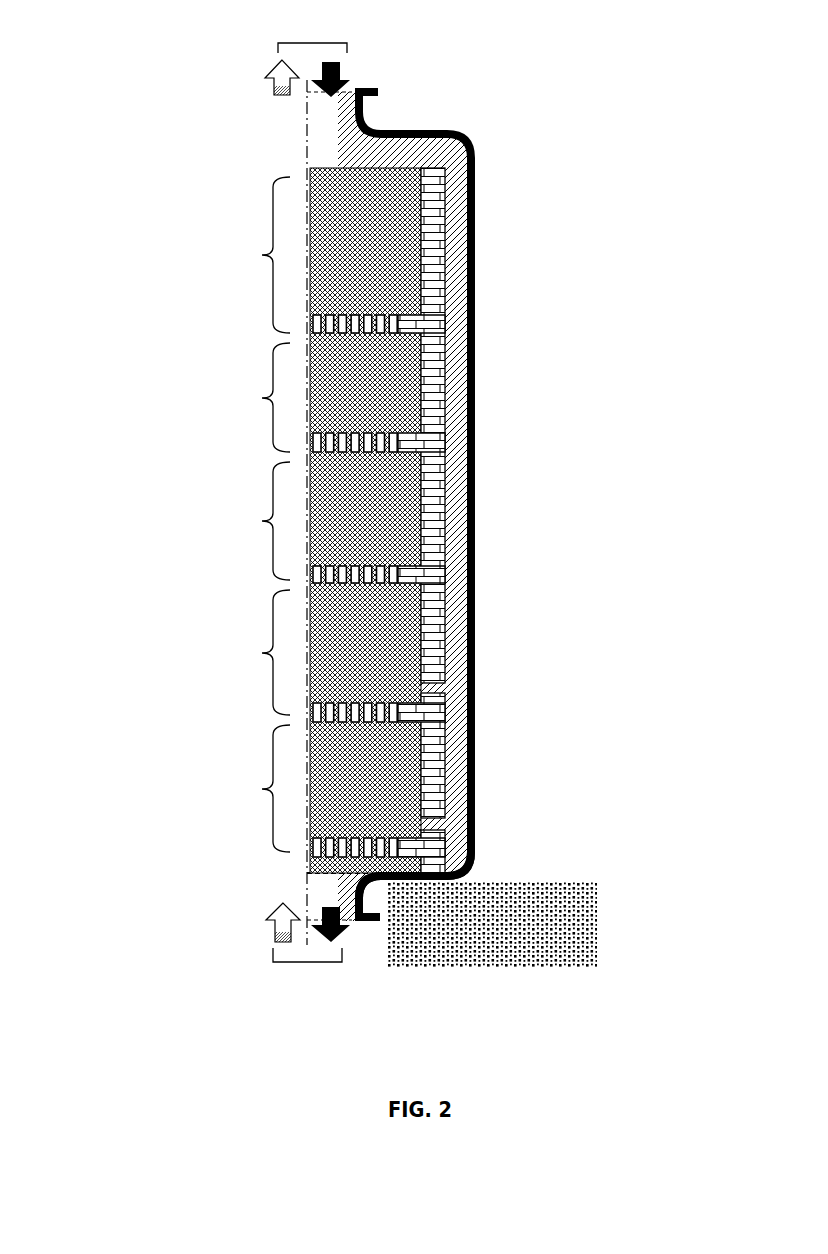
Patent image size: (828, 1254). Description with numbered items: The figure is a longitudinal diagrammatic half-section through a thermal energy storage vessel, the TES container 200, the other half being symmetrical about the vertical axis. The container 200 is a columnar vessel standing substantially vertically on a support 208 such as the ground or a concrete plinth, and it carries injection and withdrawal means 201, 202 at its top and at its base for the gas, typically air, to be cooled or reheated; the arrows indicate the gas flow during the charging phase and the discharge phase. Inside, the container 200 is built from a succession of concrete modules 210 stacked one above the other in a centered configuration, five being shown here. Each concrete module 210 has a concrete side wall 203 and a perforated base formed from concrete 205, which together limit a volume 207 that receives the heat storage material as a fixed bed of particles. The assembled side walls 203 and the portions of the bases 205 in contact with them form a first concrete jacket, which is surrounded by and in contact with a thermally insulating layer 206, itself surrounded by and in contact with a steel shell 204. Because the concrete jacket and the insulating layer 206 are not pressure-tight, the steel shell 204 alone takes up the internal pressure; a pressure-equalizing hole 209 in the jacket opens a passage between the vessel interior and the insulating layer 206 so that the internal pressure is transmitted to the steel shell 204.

The TES container 200 is at (230, 175).
The injection and withdrawal means 201 is at (313, 43).
The injection and withdrawal means 202 is at (308, 962).
The concrete side wall 203 is at (437, 297).
The steel shell 204 is at (476, 192).
The perforated base 205 is at (398, 333).
The thermally insulating layer 206 is at (445, 327).
The volume 207 is at (395, 256).
The support 208 is at (533, 887).
The pressure-equalizing hole 209 is at (476, 762).
The concrete module 210 is at (262, 789).